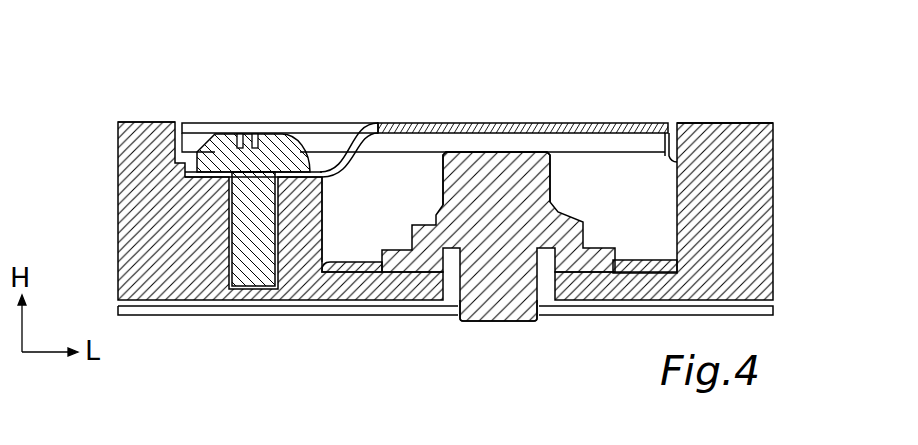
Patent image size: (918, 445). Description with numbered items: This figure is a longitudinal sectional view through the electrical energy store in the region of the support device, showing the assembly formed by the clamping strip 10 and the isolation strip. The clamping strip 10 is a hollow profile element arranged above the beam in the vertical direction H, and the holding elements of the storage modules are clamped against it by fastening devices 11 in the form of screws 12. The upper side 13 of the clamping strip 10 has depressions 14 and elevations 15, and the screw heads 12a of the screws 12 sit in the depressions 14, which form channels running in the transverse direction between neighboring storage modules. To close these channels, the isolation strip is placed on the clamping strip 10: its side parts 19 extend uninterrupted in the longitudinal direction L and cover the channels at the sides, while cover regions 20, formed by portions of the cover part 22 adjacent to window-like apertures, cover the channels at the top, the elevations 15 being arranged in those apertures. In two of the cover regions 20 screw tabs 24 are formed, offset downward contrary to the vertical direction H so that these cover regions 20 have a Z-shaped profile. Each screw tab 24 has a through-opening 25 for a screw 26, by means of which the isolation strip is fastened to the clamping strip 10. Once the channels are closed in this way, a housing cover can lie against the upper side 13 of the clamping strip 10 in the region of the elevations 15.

The clamping strip 10 is at (750, 218).
The fastening device 11 is at (456, 319).
The screw 12 is at (495, 323).
The screw head 12a is at (478, 170).
The upper side 13 is at (735, 115).
The depression 14 is at (637, 262).
The elevation 15 is at (150, 122).
The side part 19 is at (362, 232).
The cover region 20 is at (332, 120).
The cover part 22 is at (215, 123).
The screw tab 24 is at (305, 185).
The through-opening 25 is at (208, 182).
The screw 26 is at (258, 178).